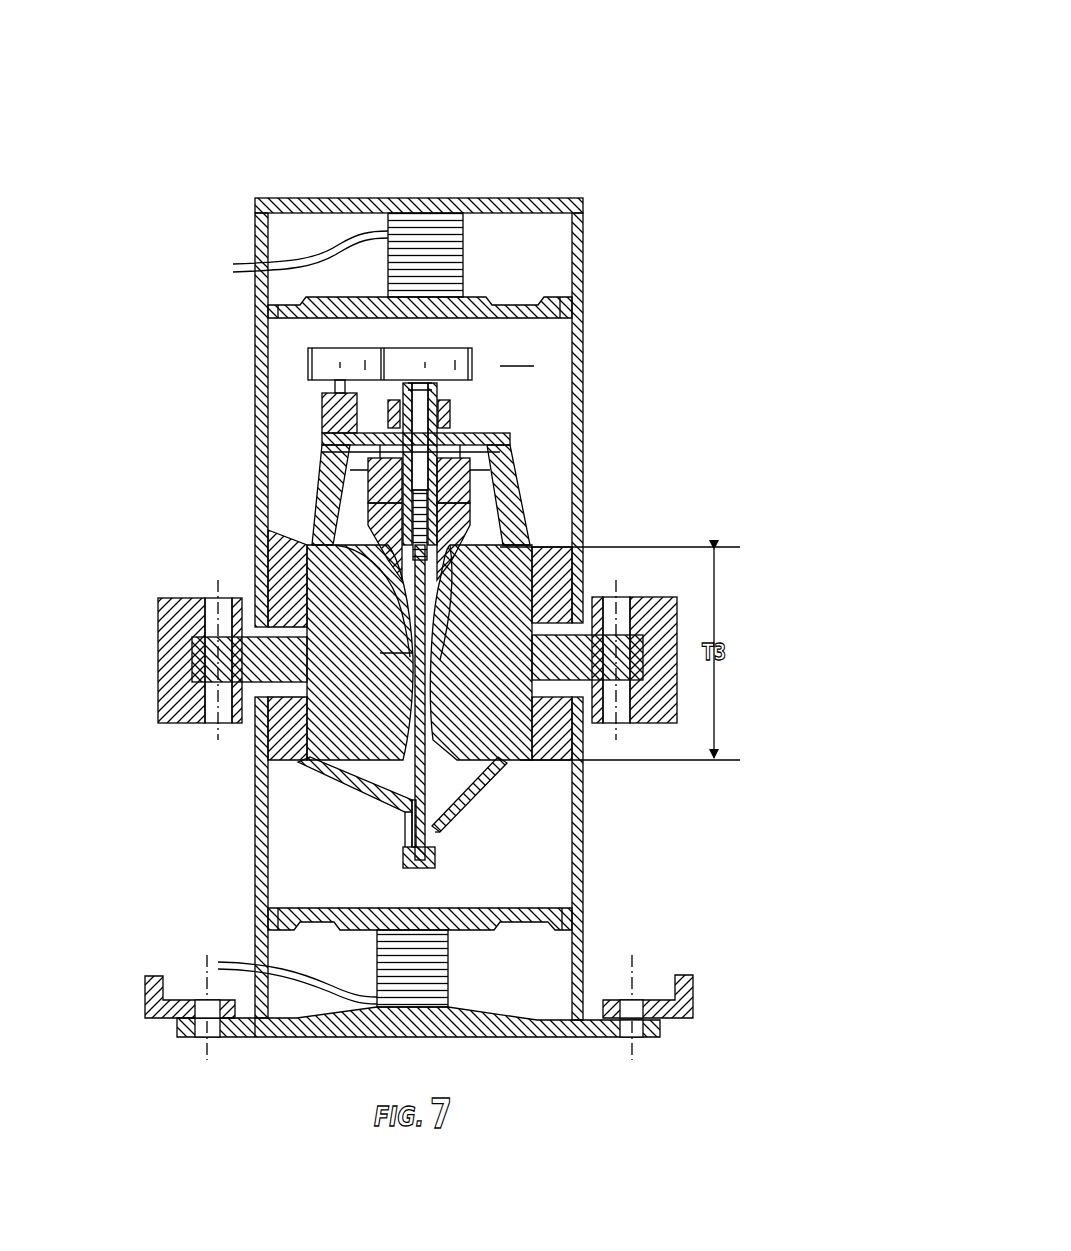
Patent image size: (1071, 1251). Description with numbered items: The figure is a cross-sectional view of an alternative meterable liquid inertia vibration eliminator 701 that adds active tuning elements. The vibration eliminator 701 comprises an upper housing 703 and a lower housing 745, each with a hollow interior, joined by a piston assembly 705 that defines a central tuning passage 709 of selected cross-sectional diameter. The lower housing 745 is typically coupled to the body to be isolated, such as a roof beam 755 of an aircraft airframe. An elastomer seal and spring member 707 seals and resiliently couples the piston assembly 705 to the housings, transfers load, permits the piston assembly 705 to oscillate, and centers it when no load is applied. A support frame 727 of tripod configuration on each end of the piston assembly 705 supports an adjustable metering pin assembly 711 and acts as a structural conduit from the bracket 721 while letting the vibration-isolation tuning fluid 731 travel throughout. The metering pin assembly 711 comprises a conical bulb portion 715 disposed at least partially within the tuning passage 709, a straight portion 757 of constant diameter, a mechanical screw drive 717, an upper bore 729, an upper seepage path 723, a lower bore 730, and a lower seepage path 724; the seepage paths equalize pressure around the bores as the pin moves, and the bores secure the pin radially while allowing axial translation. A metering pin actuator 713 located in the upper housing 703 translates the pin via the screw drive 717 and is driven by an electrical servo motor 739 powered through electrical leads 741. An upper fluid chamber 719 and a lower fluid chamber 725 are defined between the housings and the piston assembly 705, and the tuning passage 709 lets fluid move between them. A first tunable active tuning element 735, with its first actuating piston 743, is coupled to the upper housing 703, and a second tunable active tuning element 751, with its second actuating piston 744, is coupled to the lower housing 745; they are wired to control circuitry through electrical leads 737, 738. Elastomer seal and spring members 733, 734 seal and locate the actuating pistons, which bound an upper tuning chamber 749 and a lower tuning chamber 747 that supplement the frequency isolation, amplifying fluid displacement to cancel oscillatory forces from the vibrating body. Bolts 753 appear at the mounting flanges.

The meterable liquid inertia vibration eliminator 701 is at (597, 108).
The upper housing 703 is at (585, 395).
The piston assembly 705 is at (535, 570).
The elastomer seal and spring member 707 is at (552, 595).
The tuning passage 709 is at (417, 660).
The adjustable metering pin assembly 711 is at (400, 750).
The metering pin actuator 713 is at (436, 350).
The bulb portion 715 is at (382, 508).
The mechanical screw drive 717 is at (485, 480).
The upper fluid chamber 719 is at (520, 510).
The bracket 721 is at (292, 620).
The upper seepage path 723 is at (205, 436).
The lower seepage path 724 is at (402, 848).
The lower fluid chamber 725 is at (534, 876).
The support frame 727 is at (322, 434).
The upper bore 729 is at (505, 440).
The lower bore 730 is at (440, 832).
The vibration-isolation tuning fluid 731 is at (291, 256).
The elastomer seal and spring member 733 is at (578, 334).
The elastomer seal and spring member 734 is at (566, 918).
The first tunable active tuning element 735 is at (420, 240).
The electrical lead 737 is at (220, 274).
The electrical lead 738 is at (218, 967).
The electrical servo motor 739 is at (328, 393).
The electrical leads 741 is at (322, 412).
The first actuating piston 743 is at (520, 300).
The second actuating piston 744 is at (505, 930).
The lower housing 745 is at (258, 886).
The lower tuning chamber 747 is at (547, 987).
The upper tuning chamber 749 is at (527, 255).
The second tunable active tuning element 751 is at (436, 975).
The bolt 753 is at (178, 640).
The roof beam 755 is at (145, 978).
The straight portion 757 is at (413, 657).